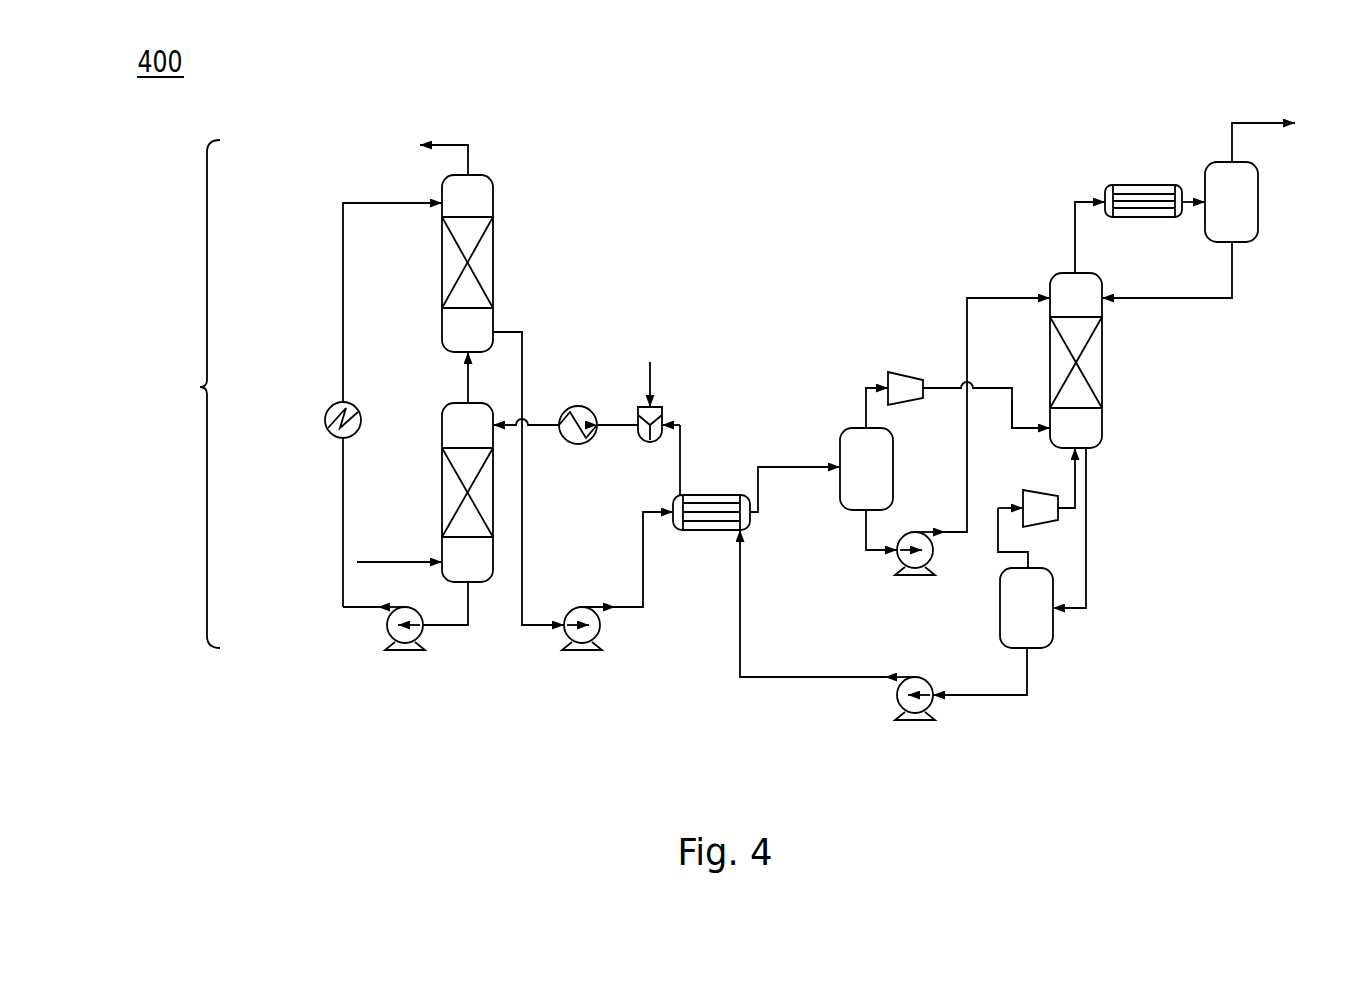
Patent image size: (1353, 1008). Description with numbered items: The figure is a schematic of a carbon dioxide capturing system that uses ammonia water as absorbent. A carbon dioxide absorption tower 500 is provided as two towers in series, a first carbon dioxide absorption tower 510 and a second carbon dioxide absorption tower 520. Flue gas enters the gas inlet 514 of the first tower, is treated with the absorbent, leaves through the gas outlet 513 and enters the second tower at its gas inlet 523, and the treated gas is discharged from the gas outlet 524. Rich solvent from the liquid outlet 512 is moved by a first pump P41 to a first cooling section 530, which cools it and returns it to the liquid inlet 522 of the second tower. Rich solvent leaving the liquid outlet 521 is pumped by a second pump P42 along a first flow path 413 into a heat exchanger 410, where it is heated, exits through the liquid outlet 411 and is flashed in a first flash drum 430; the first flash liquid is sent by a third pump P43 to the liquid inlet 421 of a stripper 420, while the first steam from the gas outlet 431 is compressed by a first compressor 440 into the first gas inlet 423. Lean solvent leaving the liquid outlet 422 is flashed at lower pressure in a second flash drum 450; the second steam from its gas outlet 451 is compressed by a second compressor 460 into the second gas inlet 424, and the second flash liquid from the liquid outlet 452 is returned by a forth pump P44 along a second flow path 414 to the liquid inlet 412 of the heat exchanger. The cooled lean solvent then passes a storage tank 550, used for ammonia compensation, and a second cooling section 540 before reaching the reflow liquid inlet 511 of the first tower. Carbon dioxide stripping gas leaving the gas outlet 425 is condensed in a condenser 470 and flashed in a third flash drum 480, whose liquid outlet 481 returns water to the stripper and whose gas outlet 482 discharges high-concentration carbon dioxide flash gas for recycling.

The carbon dioxide absorption tower 500 is at (185, 394).
The first carbon dioxide absorption tower 510 is at (453, 573).
The reflow liquid inlet 511 is at (497, 428).
The liquid outlet 512 is at (468, 585).
The gas outlet 513 is at (460, 405).
The gas inlet 514 is at (442, 560).
The second carbon dioxide absorption tower 520 is at (450, 190).
The liquid outlet 521 is at (494, 330).
The liquid inlet 522 is at (440, 215).
The gas inlet 523 is at (458, 355).
The gas outlet 524 is at (472, 172).
The first cooling section 530 is at (330, 408).
The second cooling section 540 is at (578, 408).
The storage tank 550 is at (655, 407).
The heat exchanger 410 is at (702, 507).
The liquid outlet 411 is at (753, 517).
The liquid inlet 412 is at (740, 530).
The first flow path 413 is at (633, 610).
The second flow path 414 is at (810, 678).
The stripper 420 is at (1093, 422).
The liquid inlet 421 is at (1045, 297).
The liquid outlet 422 is at (1093, 452).
The first gas inlet 423 is at (1050, 428).
The second gas inlet 424 is at (1063, 452).
The gas outlet 425 is at (1075, 270).
The first flash drum 430 is at (850, 445).
The gas outlet 431 is at (866, 420).
The first compressor 440 is at (903, 375).
The second flash drum 450 is at (1047, 628).
The gas outlet 451 is at (1028, 565).
The liquid outlet 452 is at (1030, 655).
The second compressor 460 is at (1052, 512).
The condenser 470 is at (1137, 190).
The third flash drum 480 is at (1245, 235).
The liquid outlet 481 is at (1228, 242).
The gas outlet 482 is at (1232, 160).
The first pump P41 is at (405, 643).
The second pump P42 is at (585, 643).
The third pump P43 is at (913, 568).
The forth pump P44 is at (933, 703).